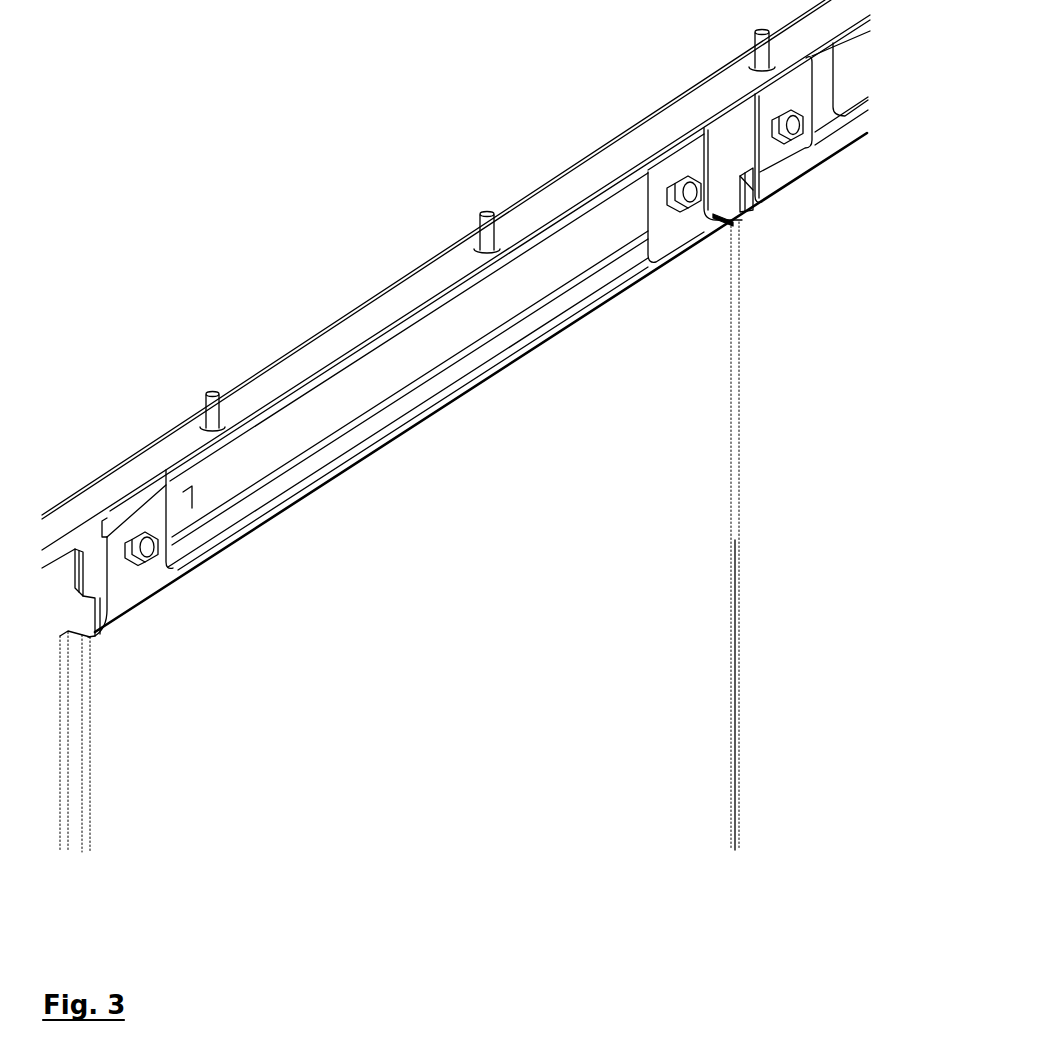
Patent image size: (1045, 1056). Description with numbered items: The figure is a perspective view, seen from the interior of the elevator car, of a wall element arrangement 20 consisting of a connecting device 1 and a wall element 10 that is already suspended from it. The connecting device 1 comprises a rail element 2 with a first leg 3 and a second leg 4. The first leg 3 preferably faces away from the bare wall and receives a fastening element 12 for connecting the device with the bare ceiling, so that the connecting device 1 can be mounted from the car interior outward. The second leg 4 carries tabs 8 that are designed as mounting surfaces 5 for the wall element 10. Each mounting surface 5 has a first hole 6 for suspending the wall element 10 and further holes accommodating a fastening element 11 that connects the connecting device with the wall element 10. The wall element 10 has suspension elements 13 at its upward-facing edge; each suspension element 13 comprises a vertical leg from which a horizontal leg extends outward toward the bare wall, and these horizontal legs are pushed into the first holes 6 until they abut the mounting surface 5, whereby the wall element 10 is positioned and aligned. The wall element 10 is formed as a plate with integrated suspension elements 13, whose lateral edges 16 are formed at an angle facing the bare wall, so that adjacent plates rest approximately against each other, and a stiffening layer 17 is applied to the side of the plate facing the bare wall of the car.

The connecting device 1 is at (391, 228).
The rail element 2 is at (415, 287).
The first leg 3 is at (290, 372).
The second leg 4 is at (583, 207).
The mounting surface 5 is at (98, 553).
The first hole 6 is at (143, 500).
The tab 8 is at (737, 150).
The wall element 10 is at (665, 590).
The fastening element 11 is at (687, 200).
The fastening element 12 is at (481, 232).
The suspension element 13 is at (660, 210).
The lateral edge 16 is at (72, 700).
The stiffening layer 17 is at (743, 187).
The wall element arrangement 20 is at (250, 180).